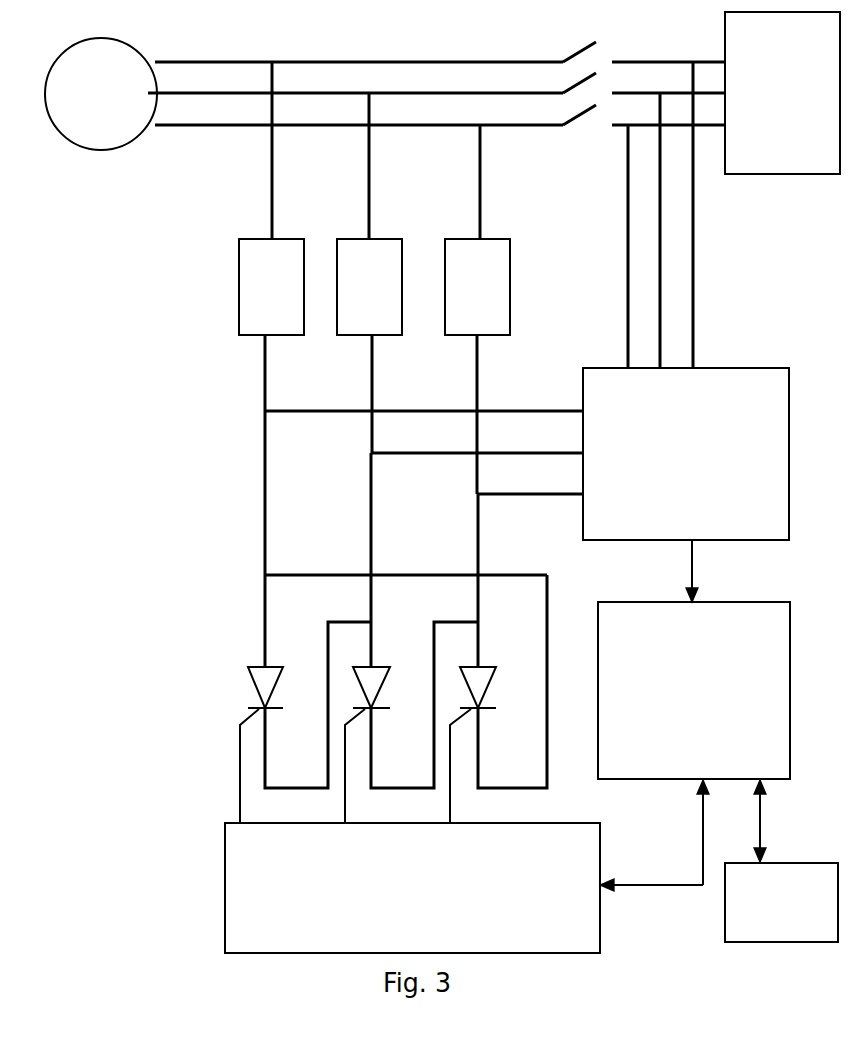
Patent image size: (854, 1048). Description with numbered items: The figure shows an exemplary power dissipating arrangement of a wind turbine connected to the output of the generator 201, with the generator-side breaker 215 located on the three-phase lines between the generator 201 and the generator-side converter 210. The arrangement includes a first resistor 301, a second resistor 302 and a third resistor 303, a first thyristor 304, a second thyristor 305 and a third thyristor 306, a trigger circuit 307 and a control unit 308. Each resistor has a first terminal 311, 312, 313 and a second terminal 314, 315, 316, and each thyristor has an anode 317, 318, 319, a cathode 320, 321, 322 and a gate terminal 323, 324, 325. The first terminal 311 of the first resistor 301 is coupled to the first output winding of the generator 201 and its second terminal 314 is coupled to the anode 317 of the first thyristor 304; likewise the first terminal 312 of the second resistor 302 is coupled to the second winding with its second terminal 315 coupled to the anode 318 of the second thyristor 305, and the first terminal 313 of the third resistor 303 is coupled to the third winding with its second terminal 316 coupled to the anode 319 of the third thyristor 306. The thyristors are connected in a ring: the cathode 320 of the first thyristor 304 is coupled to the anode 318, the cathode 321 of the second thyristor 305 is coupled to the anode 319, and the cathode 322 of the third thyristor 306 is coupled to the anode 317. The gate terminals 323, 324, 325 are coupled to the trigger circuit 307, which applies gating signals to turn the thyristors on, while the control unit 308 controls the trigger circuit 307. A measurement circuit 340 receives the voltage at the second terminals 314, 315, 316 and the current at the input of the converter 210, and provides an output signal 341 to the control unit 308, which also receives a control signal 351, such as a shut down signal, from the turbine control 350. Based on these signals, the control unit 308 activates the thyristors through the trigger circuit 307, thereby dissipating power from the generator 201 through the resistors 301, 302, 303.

The generator 201 is at (109, 95).
The generator-side converter 210 is at (774, 64).
The generator-side breaker 215 is at (587, 72).
The first resistor 301 is at (289, 287).
The second resistor 302 is at (387, 287).
The third resistor 303 is at (495, 287).
The first thyristor 304 is at (256, 690).
The second thyristor 305 is at (378, 660).
The third thyristor 306 is at (488, 690).
The trigger circuit 307 is at (286, 862).
The control unit 308 is at (661, 647).
The first terminal 311 is at (272, 212).
The first terminal 312 is at (369, 212).
The first terminal 313 is at (480, 212).
The second terminal 314 is at (265, 392).
The second terminal 315 is at (372, 392).
The second terminal 316 is at (477, 392).
The anode 317 is at (265, 612).
The anode 318 is at (371, 612).
The anode 319 is at (478, 612).
The cathode 320 is at (266, 770).
The cathode 321 is at (373, 770).
The cathode 322 is at (480, 770).
The gate terminal 323 is at (239, 818).
The gate terminal 324 is at (344, 818).
The gate terminal 325 is at (448, 818).
The measurement circuit 340 is at (644, 407).
The output signal 341 is at (692, 582).
The turbine control 350 is at (774, 897).
The control signal 351 is at (760, 842).